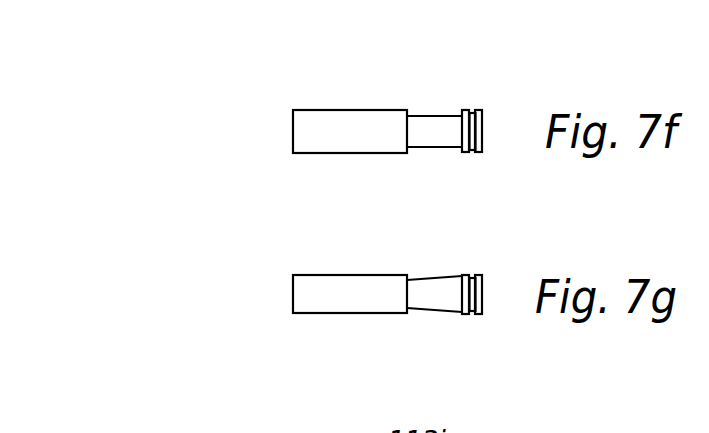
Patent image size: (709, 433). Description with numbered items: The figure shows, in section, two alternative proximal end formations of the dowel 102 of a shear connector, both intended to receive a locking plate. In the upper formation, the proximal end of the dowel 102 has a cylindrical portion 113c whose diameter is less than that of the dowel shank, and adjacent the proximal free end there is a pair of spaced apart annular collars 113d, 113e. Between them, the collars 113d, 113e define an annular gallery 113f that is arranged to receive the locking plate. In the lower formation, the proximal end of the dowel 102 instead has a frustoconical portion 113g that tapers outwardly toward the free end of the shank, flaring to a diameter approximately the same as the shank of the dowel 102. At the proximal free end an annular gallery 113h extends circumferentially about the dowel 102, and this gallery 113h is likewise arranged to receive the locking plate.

In FIG. 7F, the dowel 102 is at (292, 124).
In FIG. 7G, the dowel 102 is at (292, 292).
In FIG. 7F, the cylindrical portion 113c is at (434, 132).
In FIG. 7F, the annular collar 113d is at (462, 152).
In FIG. 7F, the annular collar 113e is at (482, 152).
In FIG. 7F, the annular gallery 113f is at (472, 112).
In FIG. 7G, the frustoconical portion 113g is at (422, 311).
In FIG. 7G, the annular gallery 113h is at (473, 316).